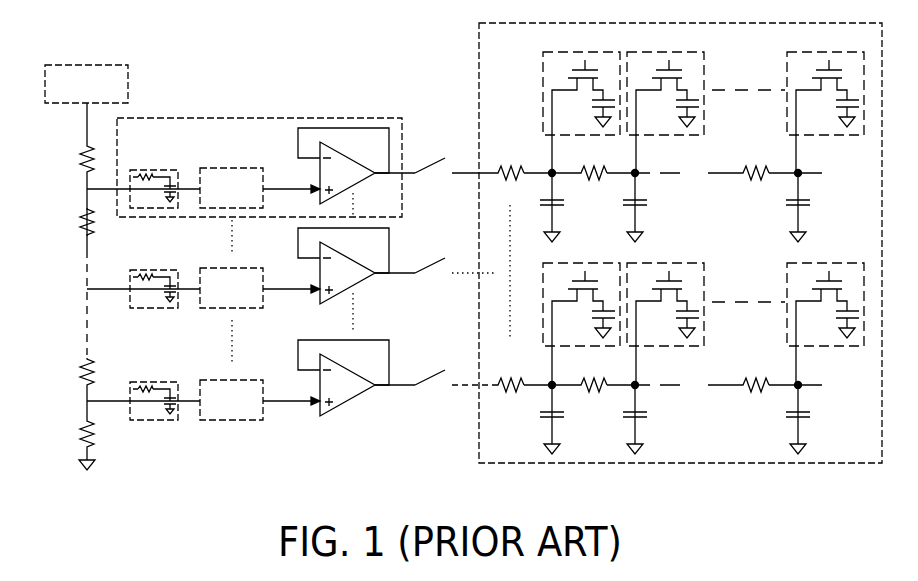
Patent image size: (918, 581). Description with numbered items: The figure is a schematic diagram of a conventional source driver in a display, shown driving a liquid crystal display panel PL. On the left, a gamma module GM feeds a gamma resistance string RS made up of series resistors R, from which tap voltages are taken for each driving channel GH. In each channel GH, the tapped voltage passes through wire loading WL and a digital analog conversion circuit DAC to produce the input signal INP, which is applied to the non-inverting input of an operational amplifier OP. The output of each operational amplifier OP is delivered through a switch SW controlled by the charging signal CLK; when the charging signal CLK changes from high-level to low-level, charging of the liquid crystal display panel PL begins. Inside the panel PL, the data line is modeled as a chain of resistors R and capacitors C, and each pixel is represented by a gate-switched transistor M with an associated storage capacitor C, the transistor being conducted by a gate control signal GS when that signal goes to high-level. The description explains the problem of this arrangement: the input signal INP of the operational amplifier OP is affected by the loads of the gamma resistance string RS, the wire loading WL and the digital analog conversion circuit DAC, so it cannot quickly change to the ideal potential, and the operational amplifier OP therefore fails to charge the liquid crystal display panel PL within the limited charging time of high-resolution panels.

The gamma voltage generating module GM is at (77, 93).
The gamma resistance string RS is at (65, 143).
The resistor R is at (78, 297).
The gamma channel GH is at (142, 139).
The wire loading WL is at (181, 177).
The digital analog conversion circuit DAC is at (218, 197).
The input signal INP is at (291, 288).
The operational amplifier OP is at (350, 181).
The charging signal CLK is at (436, 279).
The switch SW is at (431, 166).
The liquid crystal display panel PL is at (510, 53).
The gate control signal GS is at (703, 211).
The transistor M is at (702, 221).
The capacitor C is at (718, 219).